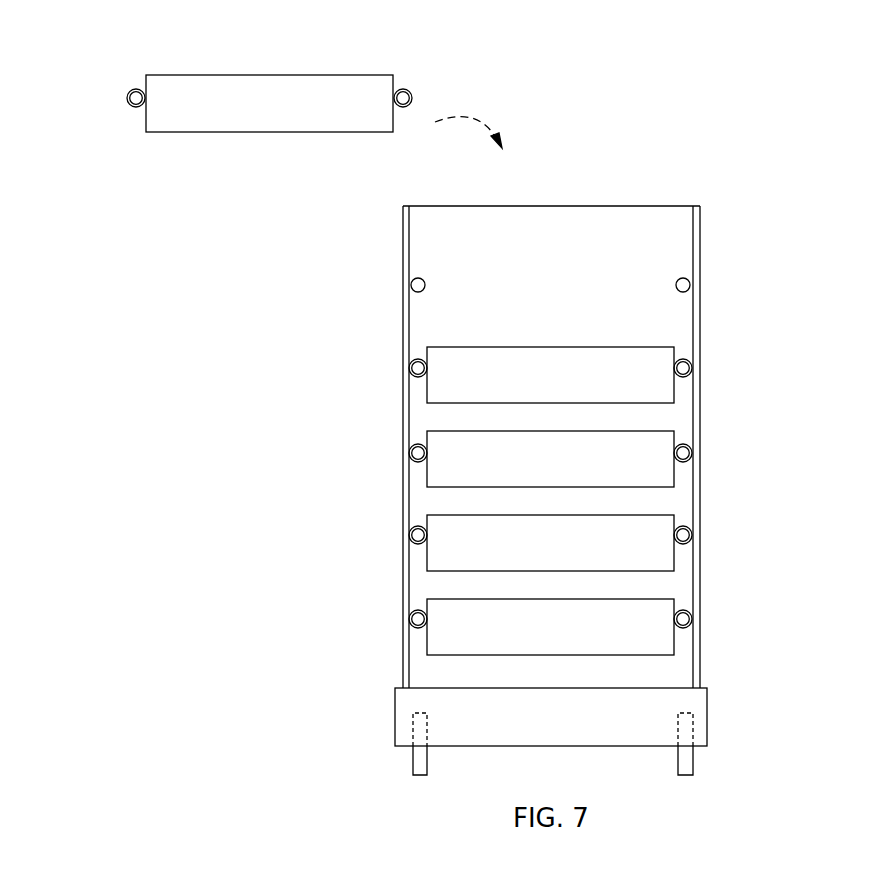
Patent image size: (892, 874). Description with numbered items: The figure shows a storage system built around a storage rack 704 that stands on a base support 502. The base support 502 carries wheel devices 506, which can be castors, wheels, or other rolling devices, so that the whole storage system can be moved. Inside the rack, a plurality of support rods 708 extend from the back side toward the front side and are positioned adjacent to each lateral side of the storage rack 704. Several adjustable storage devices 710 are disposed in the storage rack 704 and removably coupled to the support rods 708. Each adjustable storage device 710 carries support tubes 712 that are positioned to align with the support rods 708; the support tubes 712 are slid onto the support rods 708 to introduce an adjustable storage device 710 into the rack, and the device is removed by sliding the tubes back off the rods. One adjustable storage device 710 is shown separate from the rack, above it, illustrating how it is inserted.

The base support 502 is at (707, 715).
The wheel devices 506 is at (418, 778).
The storage rack 704 is at (573, 205).
The support rods 708 is at (682, 278).
The adjustable storage devices 710 is at (215, 75).
The support tubes 712 is at (127, 92).